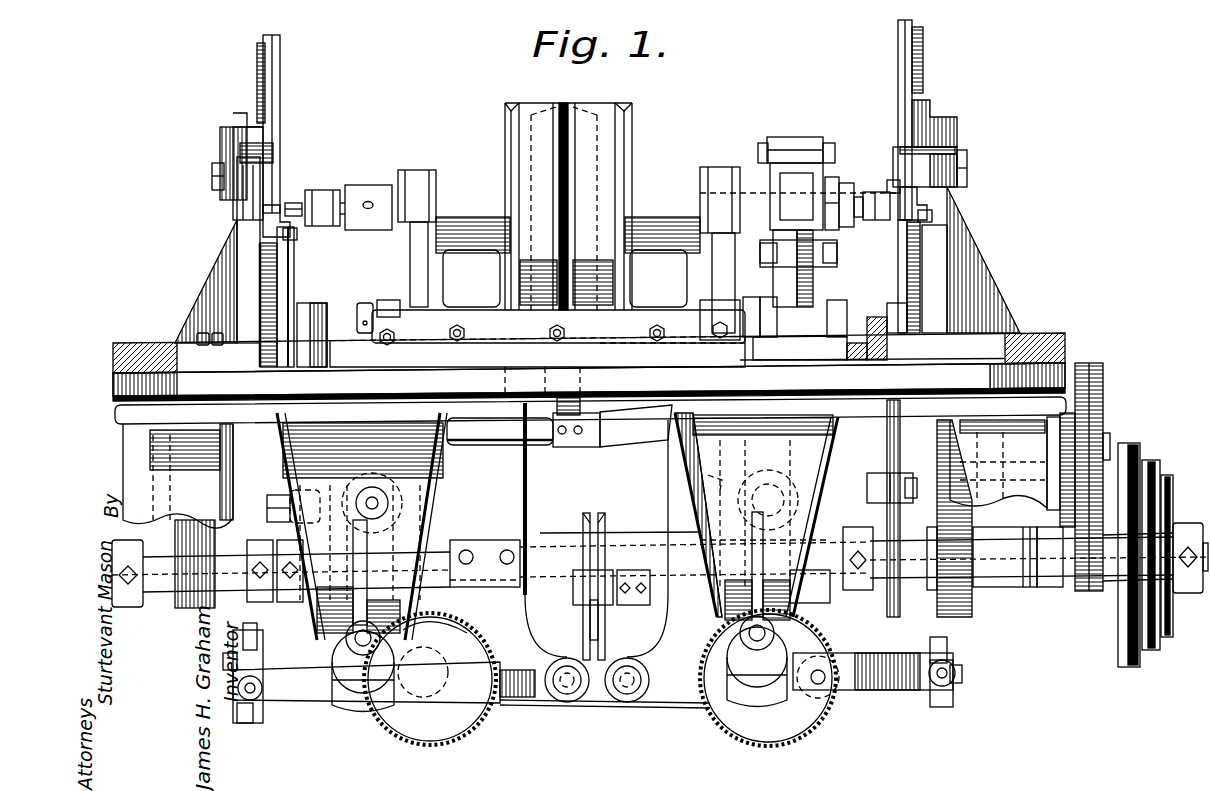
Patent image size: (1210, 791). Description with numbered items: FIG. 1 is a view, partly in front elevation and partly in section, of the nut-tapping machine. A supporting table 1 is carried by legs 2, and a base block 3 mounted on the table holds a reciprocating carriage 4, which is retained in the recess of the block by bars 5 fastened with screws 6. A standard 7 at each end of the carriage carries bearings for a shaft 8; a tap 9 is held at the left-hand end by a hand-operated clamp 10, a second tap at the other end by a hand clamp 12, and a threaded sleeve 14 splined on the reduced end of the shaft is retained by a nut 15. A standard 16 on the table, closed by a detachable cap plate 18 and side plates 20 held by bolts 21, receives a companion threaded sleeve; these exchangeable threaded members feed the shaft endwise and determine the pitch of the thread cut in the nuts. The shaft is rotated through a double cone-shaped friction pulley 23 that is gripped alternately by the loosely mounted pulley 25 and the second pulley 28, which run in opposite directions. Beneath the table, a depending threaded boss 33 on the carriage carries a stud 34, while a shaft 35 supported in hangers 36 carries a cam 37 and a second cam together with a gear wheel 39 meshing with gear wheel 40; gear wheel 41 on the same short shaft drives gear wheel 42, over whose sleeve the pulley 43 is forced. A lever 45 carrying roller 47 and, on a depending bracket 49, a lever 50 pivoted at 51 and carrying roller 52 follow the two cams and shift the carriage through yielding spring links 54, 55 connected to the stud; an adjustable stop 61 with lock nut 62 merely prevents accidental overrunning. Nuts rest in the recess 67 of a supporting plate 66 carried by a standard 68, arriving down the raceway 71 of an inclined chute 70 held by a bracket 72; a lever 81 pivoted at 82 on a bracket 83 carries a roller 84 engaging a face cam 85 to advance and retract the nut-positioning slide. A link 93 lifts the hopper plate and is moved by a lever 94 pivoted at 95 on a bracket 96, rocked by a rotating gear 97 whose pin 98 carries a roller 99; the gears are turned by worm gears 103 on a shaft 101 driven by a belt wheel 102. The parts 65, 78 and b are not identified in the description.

The supporting table 1 is at (130, 387).
The legs 2 is at (197, 457).
The base block 3 is at (702, 360).
The carriage 4 is at (627, 343).
The bars 5 is at (490, 345).
The screws 6 is at (500, 308).
The standard 7 is at (433, 287).
The shaft 8 is at (372, 185).
The tap 9 is at (298, 200).
The hand-operated clamp 10 is at (330, 190).
The hand clamp 12 is at (832, 252).
The threaded sleeve 14 is at (830, 185).
The nut 15 is at (848, 198).
The standard 16 is at (792, 307).
The cap plate 18 is at (815, 160).
The plates 20 is at (775, 148).
The bolts 21 is at (767, 157).
The double cone-shaped friction pulley 23 is at (575, 117).
The pulley 25 is at (610, 122).
The second pulley 28 is at (522, 124).
The depending threaded boss 33 is at (505, 383).
The depending stud 34 is at (590, 383).
The shaft 35 is at (900, 548).
The depending hangers 36 is at (1018, 550).
The cam 37 is at (467, 633).
The gear wheel 39 is at (982, 630).
The gear wheel 40 is at (944, 507).
The gear wheel 41 is at (1093, 440).
The gear wheel 42 is at (1078, 591).
The pulley 43 is at (1133, 633).
The lever 45 is at (803, 482).
The roller 47 is at (760, 498).
The depending bracket 49 is at (413, 490).
The lever 50 is at (333, 467).
The pivot 51 is at (357, 690).
The roller 52 is at (427, 518).
The link 54 is at (545, 445).
The link 55 is at (625, 447).
The adjustable stop 61 is at (365, 307).
The lock nut 62 is at (386, 302).
The gusset 65 is at (310, 300).
The supporting plate 66 is at (285, 240).
The recess 67 is at (265, 230).
The standard 68 is at (245, 250).
The inclined chute 70 is at (272, 108).
The raceway 71 is at (935, 177).
The bracket 72 is at (233, 113).
The hub 78 is at (273, 176).
The lever 81 is at (290, 268).
The pivot 82 is at (935, 300).
The bracket 83 is at (905, 322).
The roller 84 is at (280, 520).
The face cam 85 is at (303, 630).
The link 93 is at (247, 650).
The lever 94 is at (300, 695).
The pivot 95 is at (570, 686).
The bracket 96 is at (540, 703).
The gear 97 is at (462, 712).
The pin 98 is at (800, 703).
The roller 99 is at (375, 700).
The shaft 101 is at (560, 600).
The belt wheel 102 is at (600, 527).
The worm gears 103 is at (455, 548).
The point b is at (709, 471).